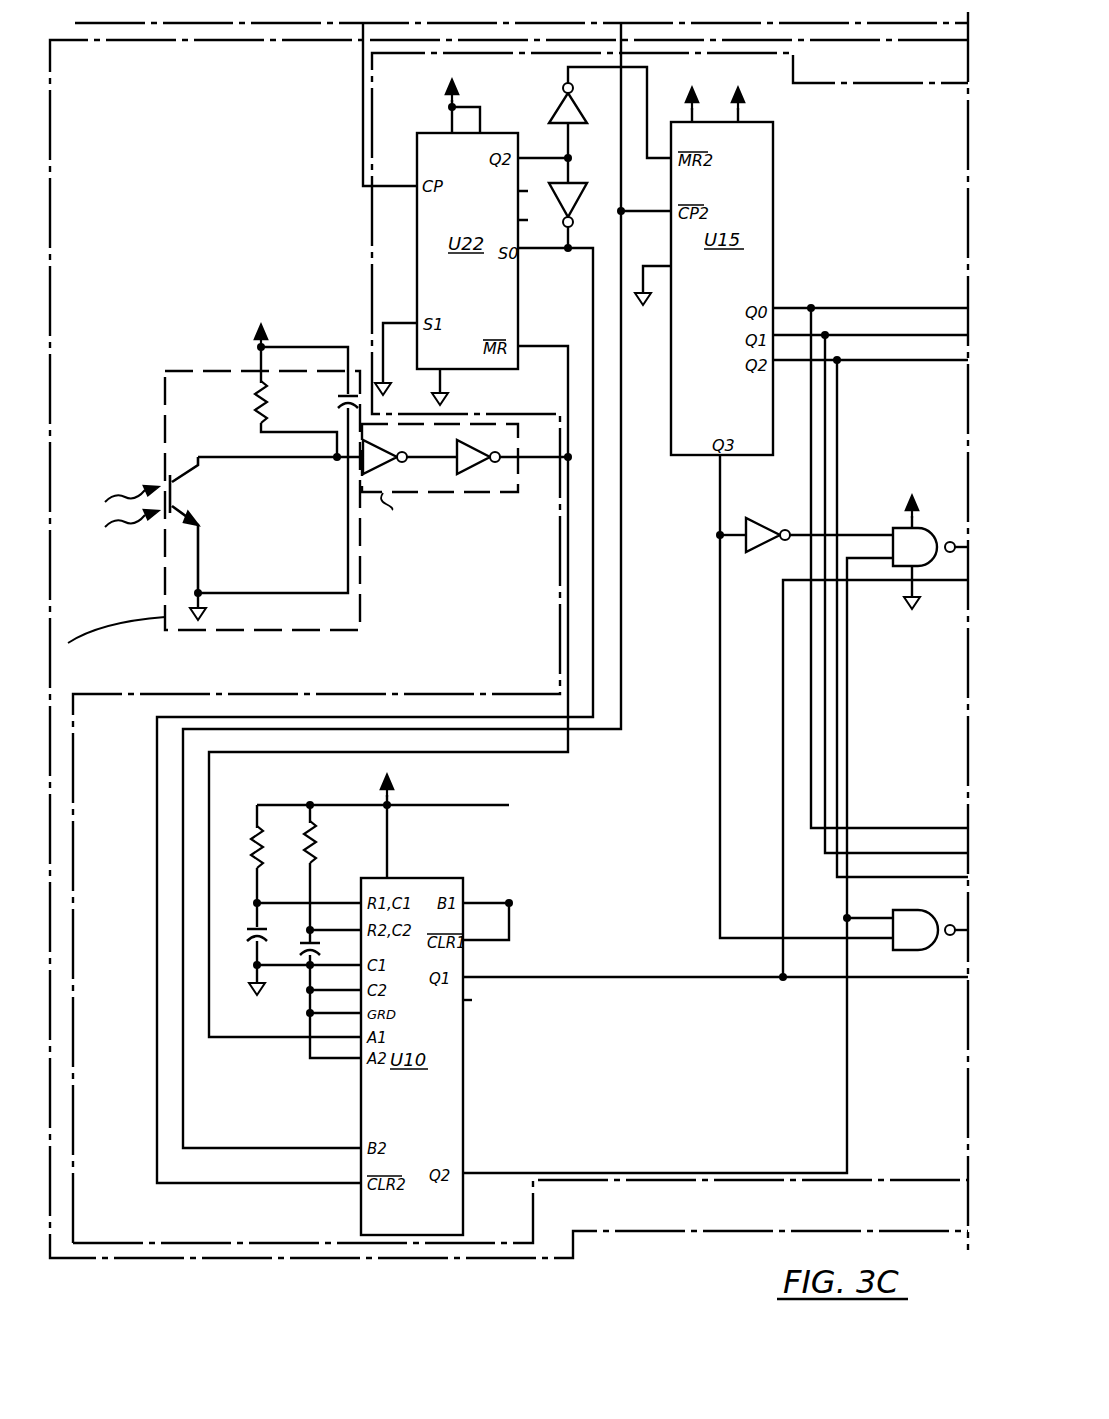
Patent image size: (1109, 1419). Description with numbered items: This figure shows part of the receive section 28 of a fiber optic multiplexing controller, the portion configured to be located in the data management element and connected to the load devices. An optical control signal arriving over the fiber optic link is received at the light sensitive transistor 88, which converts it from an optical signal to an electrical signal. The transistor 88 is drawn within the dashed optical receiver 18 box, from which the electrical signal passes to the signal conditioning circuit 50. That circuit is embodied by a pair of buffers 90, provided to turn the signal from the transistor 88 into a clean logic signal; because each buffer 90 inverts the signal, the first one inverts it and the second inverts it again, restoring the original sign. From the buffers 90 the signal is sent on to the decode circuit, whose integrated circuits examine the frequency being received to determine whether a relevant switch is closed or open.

The receive section 28 is at (736, 22).
The optical receiver 18 is at (215, 502).
The light sensitive transistor 88 is at (193, 503).
The signal conditioning circuit 50 is at (518, 492).
The buffers 90 is at (455, 469).